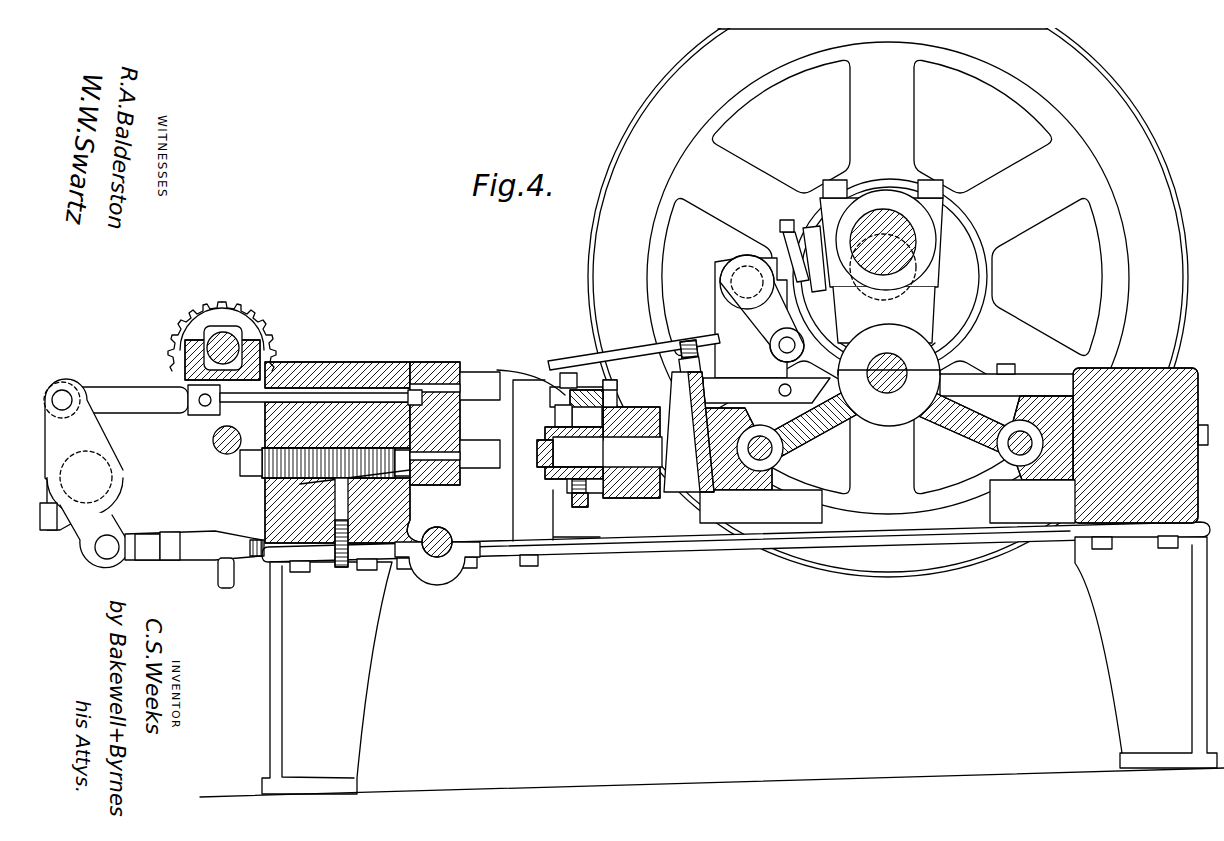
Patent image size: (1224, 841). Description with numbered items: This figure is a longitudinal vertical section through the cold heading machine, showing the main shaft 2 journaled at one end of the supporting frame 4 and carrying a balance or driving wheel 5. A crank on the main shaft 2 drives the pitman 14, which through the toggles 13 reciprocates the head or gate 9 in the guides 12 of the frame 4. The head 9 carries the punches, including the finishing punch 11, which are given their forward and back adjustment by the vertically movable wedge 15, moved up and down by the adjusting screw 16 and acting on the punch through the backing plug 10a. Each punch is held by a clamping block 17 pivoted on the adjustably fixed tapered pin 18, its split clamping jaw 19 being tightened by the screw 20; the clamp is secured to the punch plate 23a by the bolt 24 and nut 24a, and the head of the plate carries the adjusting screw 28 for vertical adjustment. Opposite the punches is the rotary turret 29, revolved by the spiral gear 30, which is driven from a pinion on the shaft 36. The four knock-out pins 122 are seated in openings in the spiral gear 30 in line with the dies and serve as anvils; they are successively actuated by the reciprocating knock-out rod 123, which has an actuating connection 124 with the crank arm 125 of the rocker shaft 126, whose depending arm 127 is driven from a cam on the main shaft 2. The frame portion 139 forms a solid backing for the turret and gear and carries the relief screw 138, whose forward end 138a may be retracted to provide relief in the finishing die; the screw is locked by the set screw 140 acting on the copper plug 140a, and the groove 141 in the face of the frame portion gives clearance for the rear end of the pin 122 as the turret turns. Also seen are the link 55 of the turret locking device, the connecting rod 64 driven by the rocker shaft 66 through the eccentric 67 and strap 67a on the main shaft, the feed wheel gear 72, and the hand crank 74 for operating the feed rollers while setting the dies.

The main shaft 2 is at (884, 215).
The supporting frame 4 is at (1146, 364).
The balance or driving wheel 5 is at (888, 288).
The reciprocating head or gate 9 is at (633, 490).
The backing plug 10a is at (631, 452).
The finishing punch 11 is at (538, 449).
The guides 12 is at (888, 384).
The toggles 13 is at (890, 429).
The pitman 14 is at (881, 265).
The vertically movable wedge 15 is at (689, 432).
The adjusting screw 16 is at (686, 422).
The clamping block 17 is at (580, 507).
The tapered pin 18 is at (568, 486).
The split clamping jaw 19 is at (547, 433).
The screw 20 is at (578, 452).
The punch plate 23a is at (590, 387).
The bolt 24 is at (572, 410).
The nut 24a is at (556, 414).
The adjusting screw 28 is at (612, 384).
The rotary turret 29 is at (454, 347).
The spiral gear 30 is at (432, 486).
The shaft 36 is at (458, 540).
The link 55 is at (648, 364).
The connecting rod 64 is at (557, 373).
The rocker shaft 66 is at (738, 266).
The eccentric 67 is at (813, 240).
The eccentric strap 67a is at (790, 238).
The spur toothed wheel 72 is at (243, 297).
The crank 74 is at (228, 590).
The ejecting or knock-out pins 122 is at (420, 390).
The knock-out rod 123 is at (330, 386).
The actuating connection 124 is at (128, 400).
The crank arm 125 is at (68, 425).
The rocker shaft 126 is at (118, 466).
The depending arm 127 is at (104, 562).
The relief screw 138 is at (262, 470).
The forward end of relief screw 138a is at (405, 474).
The frame portion 139 is at (272, 510).
The set screw 140 is at (342, 570).
The copper plug 140a is at (300, 484).
The groove 141 is at (400, 364).